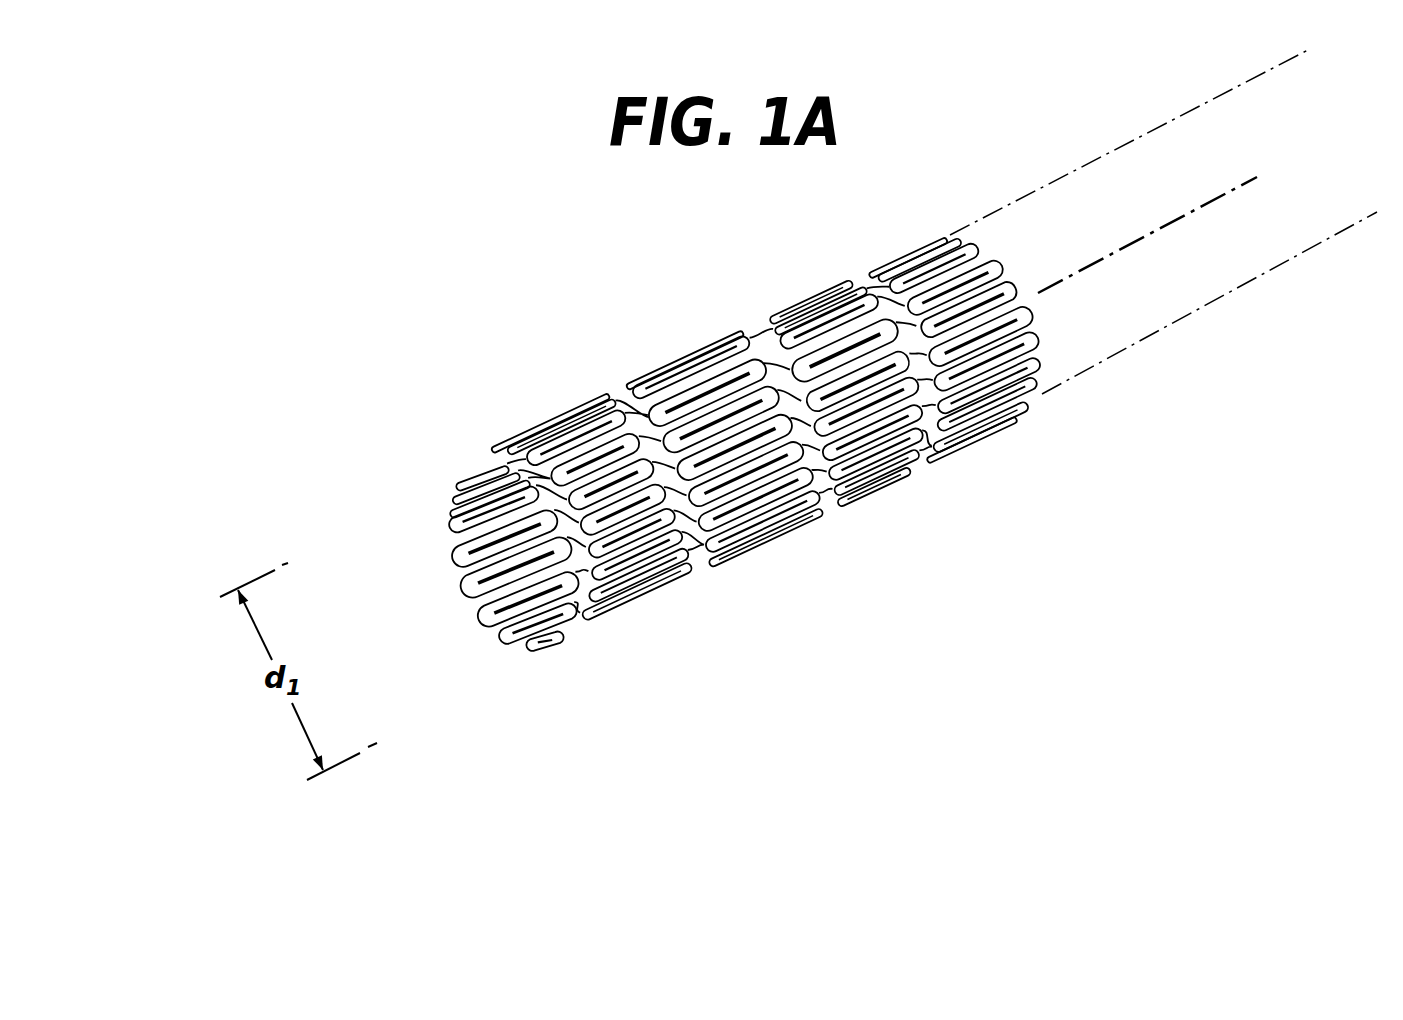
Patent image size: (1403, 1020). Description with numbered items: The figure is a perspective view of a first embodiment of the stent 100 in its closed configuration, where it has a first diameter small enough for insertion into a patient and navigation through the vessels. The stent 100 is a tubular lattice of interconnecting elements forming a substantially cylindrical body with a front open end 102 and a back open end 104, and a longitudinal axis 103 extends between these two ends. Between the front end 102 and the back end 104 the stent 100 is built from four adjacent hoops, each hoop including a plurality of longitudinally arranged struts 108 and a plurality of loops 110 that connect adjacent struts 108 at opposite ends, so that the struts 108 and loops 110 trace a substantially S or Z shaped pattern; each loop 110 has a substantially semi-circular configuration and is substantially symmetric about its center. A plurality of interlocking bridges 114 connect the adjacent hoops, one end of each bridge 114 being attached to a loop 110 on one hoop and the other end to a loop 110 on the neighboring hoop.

The stent 100 is at (548, 388).
The front open end 102 is at (445, 578).
The longitudinal axis 103 is at (1273, 168).
The back open end 104 is at (1016, 268).
The strut 108 is at (710, 397).
The loop 110 is at (1038, 340).
The bridge 114 is at (650, 440).